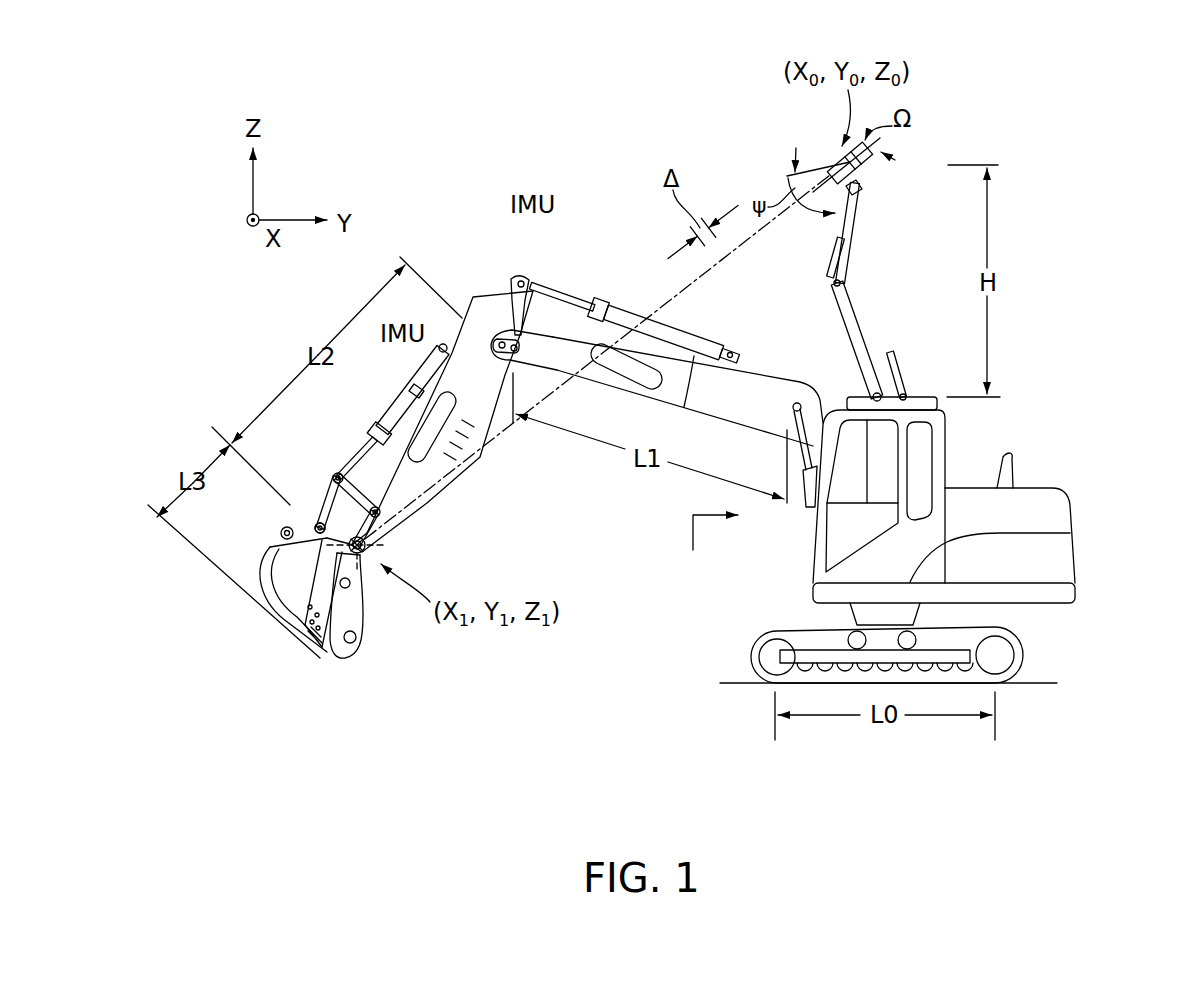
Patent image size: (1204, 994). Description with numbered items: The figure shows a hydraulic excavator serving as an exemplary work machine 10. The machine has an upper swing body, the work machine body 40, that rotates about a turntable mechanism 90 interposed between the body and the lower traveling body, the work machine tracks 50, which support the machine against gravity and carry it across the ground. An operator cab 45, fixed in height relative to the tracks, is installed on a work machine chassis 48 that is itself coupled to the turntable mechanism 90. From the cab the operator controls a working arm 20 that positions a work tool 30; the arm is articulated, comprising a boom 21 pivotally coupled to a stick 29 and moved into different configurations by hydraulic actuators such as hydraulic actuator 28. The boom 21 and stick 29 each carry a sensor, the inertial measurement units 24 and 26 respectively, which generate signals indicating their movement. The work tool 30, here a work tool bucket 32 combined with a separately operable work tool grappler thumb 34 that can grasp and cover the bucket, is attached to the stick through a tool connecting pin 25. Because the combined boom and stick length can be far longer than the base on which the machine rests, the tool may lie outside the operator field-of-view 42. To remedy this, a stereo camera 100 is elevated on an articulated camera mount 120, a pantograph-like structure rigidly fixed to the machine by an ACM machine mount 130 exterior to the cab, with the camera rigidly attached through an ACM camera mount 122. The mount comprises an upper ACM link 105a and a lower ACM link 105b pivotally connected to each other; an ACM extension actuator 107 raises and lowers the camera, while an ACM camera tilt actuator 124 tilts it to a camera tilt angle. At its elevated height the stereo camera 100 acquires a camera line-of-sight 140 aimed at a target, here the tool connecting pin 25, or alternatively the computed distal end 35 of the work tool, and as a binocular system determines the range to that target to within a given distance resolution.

The work machine 10 is at (1088, 232).
The working arm 20 is at (495, 252).
The boom 21 is at (667, 393).
The inertial measurement unit 24 is at (563, 308).
The tool connecting pin 25 is at (381, 551).
The inertial measurement unit 26 is at (430, 410).
The hydraulic actuator 28 is at (440, 480).
The stick 29 is at (400, 483).
The work tool 30 is at (360, 679).
The work tool bucket 32 is at (280, 545).
The work tool grappler thumb 34 is at (359, 608).
The distal end 35 is at (327, 654).
The work machine body 40 is at (1040, 490).
The operator field-of-view 42 is at (710, 547).
The operator cab 45 is at (923, 557).
The work machine chassis 48 is at (817, 590).
The work machine tracks 50 is at (751, 650).
The turntable mechanism 90 is at (855, 613).
The stereo camera 100 is at (760, 157).
The upper ACM link 105a is at (860, 218).
The lower ACM link 105b is at (853, 340).
The ACM extension actuator 107 is at (898, 368).
The articulated camera mount 120 is at (832, 162).
The ACM camera mount 122 is at (876, 170).
The ACM camera tilt actuator 124 is at (830, 262).
The ACM machine mount 130 is at (940, 404).
The camera line-of-sight 140 is at (665, 307).